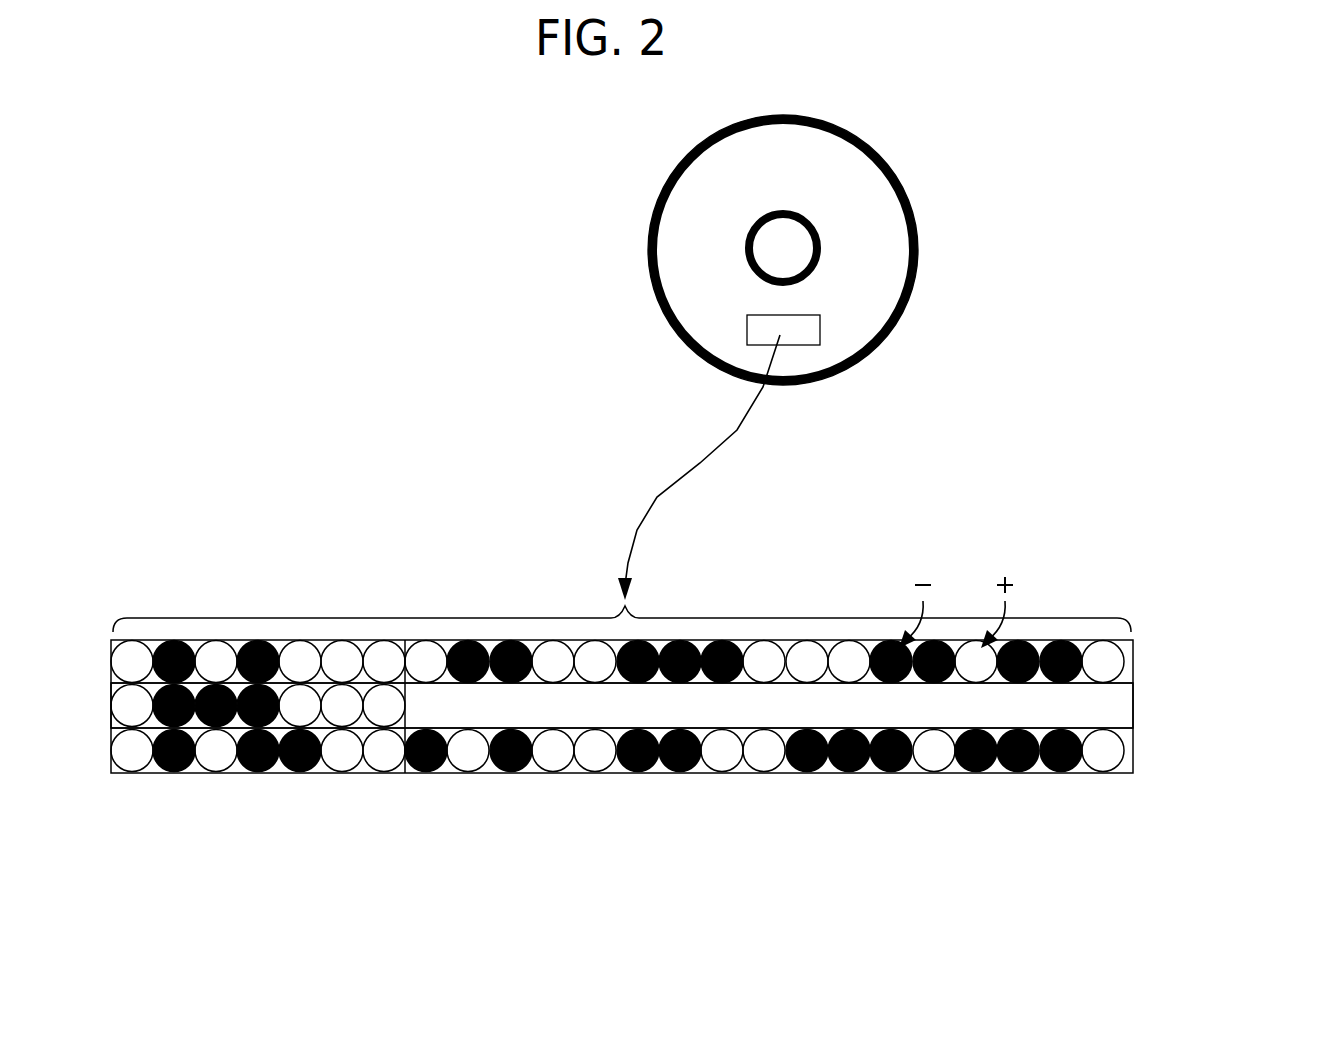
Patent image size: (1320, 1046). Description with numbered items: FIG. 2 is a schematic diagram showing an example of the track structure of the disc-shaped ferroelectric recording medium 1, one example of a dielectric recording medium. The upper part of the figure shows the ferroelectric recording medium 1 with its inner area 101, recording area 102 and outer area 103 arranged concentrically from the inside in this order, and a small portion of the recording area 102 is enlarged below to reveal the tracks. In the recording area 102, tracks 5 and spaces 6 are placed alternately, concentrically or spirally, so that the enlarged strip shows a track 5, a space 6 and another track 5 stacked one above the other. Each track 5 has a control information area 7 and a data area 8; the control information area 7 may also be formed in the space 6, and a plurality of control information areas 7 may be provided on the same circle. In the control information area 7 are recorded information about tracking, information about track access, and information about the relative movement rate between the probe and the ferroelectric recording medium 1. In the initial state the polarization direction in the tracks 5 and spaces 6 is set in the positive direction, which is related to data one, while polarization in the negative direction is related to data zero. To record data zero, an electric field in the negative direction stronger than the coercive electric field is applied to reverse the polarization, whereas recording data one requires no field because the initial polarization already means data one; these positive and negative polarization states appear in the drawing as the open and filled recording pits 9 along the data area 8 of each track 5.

The ferroelectric recording medium 1 is at (812, 350).
The inner area 101 is at (818, 228).
The recording area 102 is at (890, 242).
The outer area 103 is at (917, 277).
The track 5 is at (1135, 672).
The space 6 is at (1135, 717).
The control information area 7 is at (403, 792).
The data area 8 is at (1131, 792).
The recording pit 9 is at (593, 769).